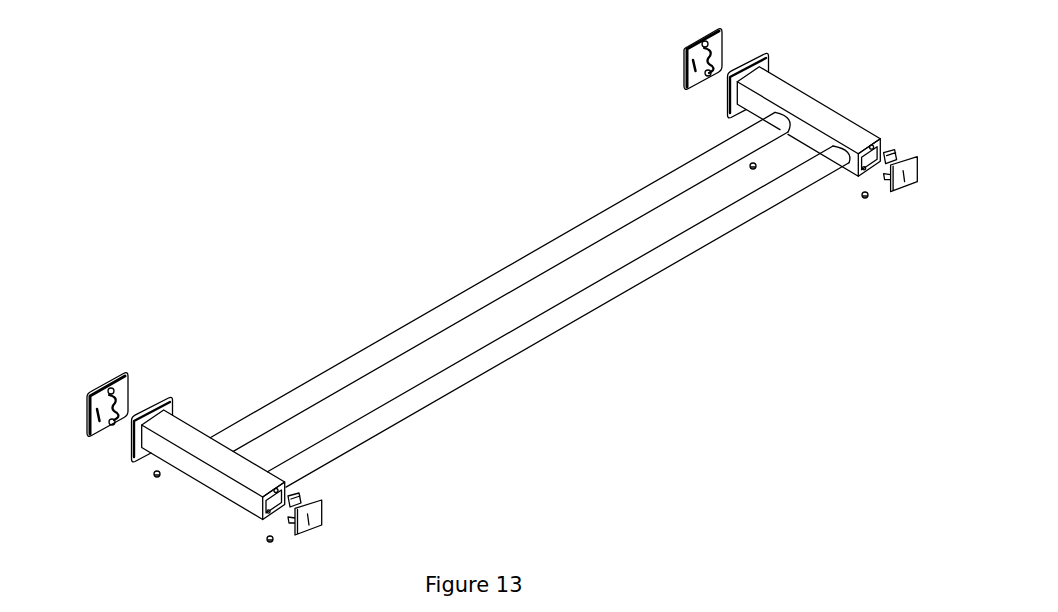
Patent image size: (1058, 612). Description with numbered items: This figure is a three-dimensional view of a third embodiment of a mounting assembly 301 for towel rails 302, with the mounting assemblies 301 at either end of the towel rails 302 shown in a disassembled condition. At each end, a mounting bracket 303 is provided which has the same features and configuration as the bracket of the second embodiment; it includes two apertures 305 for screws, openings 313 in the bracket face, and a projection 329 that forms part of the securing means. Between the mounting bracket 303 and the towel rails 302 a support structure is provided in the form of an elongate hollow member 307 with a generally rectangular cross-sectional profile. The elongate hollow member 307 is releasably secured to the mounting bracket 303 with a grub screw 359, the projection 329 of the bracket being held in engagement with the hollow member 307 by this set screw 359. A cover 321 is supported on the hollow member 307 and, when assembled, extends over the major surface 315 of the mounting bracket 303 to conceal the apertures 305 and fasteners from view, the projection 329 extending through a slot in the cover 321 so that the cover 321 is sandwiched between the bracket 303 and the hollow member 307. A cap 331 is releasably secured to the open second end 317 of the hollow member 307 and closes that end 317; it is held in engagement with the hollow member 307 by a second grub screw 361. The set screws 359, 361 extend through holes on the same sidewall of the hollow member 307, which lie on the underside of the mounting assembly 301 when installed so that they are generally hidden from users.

The mounting assembly 301 is at (848, 55).
The towel rails 302 is at (454, 319).
The mounting bracket 303 is at (145, 365).
The apertures 305 is at (111, 421).
The elongate hollow member 307 is at (192, 430).
The holes 313 is at (122, 400).
The major surface 315 is at (105, 434).
The second end 317 is at (302, 492).
The cover 321 is at (173, 400).
The projection 329 is at (117, 424).
The cap 331 is at (345, 518).
The grub screw 359 is at (157, 478).
The grub screw 361 is at (271, 543).